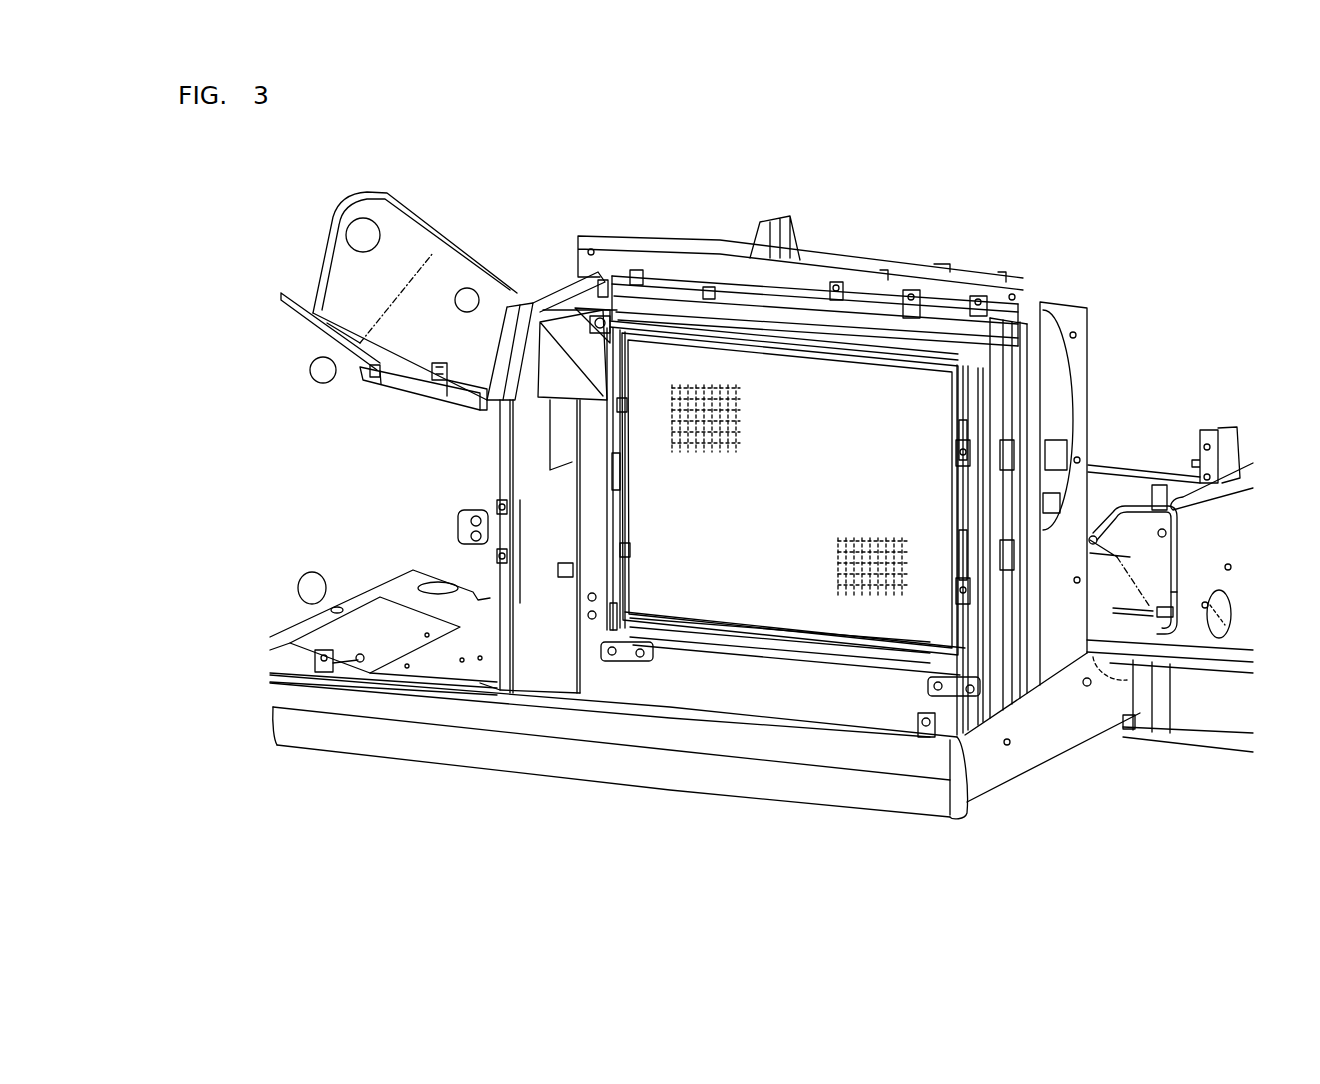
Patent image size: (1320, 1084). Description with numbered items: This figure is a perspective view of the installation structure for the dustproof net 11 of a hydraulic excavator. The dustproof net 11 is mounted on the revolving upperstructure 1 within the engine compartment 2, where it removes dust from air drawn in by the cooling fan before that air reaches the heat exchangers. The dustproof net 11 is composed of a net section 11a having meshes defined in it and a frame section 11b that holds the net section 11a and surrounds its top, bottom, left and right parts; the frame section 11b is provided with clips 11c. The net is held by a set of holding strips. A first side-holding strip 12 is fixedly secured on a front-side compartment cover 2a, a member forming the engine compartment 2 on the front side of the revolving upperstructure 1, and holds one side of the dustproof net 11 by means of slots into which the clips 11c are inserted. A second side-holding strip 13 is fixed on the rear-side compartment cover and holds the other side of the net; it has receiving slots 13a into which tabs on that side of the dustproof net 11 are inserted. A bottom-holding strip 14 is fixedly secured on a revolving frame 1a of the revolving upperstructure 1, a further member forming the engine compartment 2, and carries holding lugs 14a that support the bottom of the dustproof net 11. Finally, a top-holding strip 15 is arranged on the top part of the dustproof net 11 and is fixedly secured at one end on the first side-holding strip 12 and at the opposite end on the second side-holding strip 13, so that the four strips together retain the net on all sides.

The revolving upperstructure 1 is at (427, 780).
The revolving frame 1a is at (1160, 740).
The engine compartment 2 is at (1145, 348).
The front-side compartment cover 2a is at (519, 300).
The dustproof net 11 is at (840, 478).
The net section 11a is at (757, 560).
The frame section 11b is at (853, 353).
The clips 11c is at (617, 404).
The first side-holding strip 12 is at (600, 436).
The second side-holding strip 13 is at (975, 485).
The receiving slots 13a is at (960, 458).
The bottom-holding strip 14 is at (775, 656).
The holding lugs 14a is at (657, 628).
The top-holding strip 15 is at (780, 340).